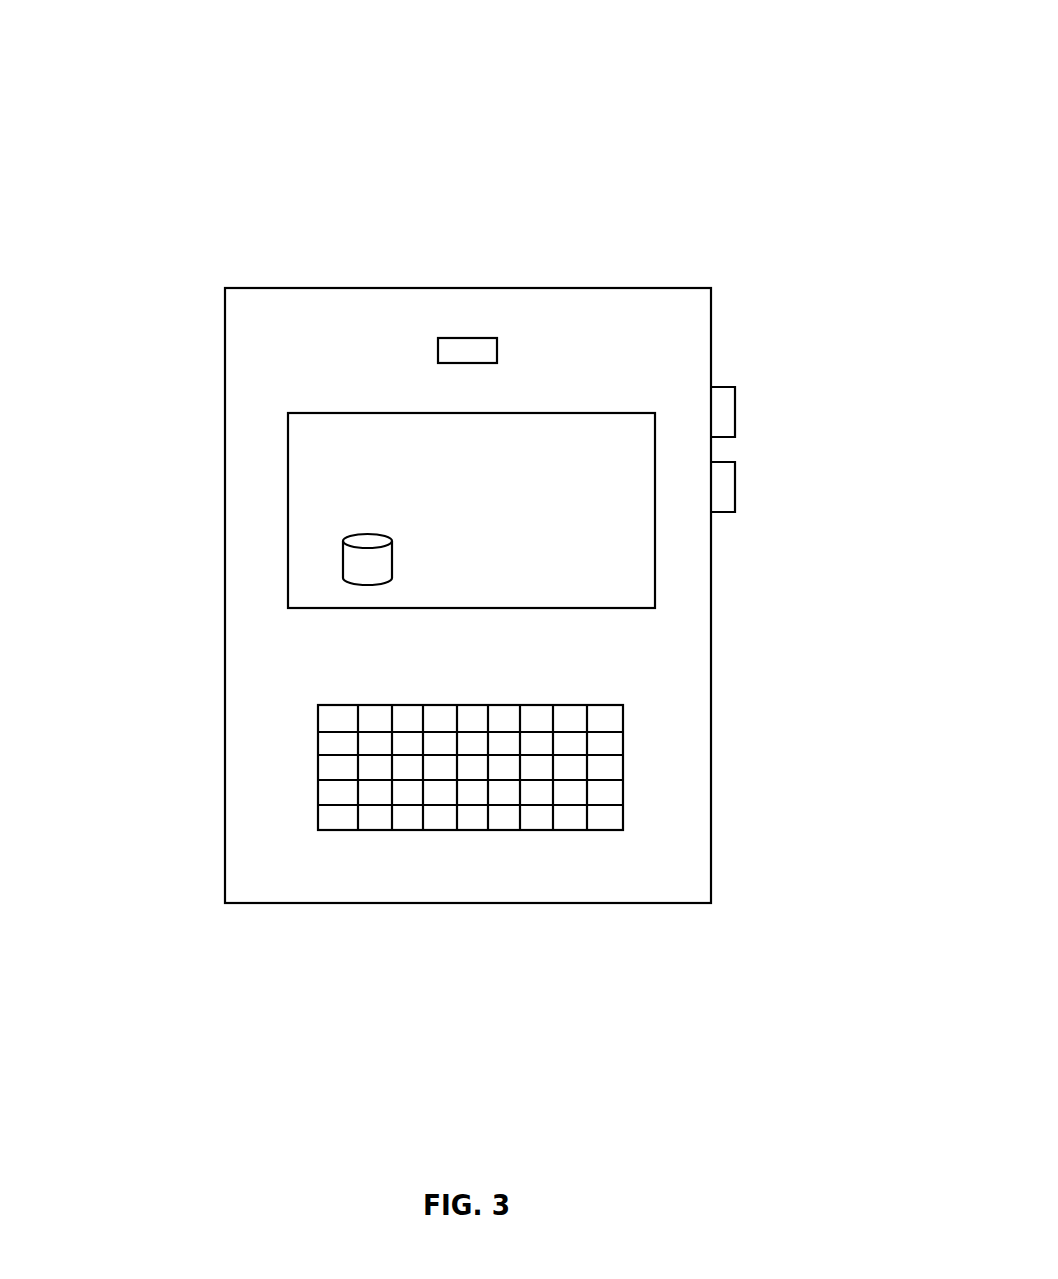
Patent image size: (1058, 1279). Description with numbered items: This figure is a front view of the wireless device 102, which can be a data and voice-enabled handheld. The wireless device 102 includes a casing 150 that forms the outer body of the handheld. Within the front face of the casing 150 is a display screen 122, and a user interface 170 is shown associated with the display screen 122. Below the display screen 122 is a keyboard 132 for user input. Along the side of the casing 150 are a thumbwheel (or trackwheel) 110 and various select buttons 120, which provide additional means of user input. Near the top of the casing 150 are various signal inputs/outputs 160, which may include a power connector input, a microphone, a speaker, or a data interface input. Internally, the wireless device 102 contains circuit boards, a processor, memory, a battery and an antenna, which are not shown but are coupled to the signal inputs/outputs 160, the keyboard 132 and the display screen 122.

The wireless device 102 is at (455, 265).
The casing 150 is at (290, 313).
The signal inputs/outputs 160 is at (463, 338).
The thumbwheel 110 is at (727, 413).
The select buttons 120 is at (727, 487).
The display screen 122 is at (328, 462).
The user interface 170 is at (360, 558).
The keyboard 132 is at (503, 780).